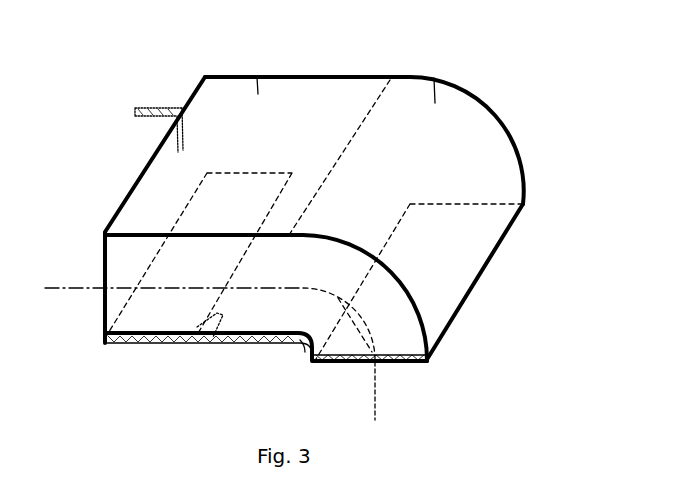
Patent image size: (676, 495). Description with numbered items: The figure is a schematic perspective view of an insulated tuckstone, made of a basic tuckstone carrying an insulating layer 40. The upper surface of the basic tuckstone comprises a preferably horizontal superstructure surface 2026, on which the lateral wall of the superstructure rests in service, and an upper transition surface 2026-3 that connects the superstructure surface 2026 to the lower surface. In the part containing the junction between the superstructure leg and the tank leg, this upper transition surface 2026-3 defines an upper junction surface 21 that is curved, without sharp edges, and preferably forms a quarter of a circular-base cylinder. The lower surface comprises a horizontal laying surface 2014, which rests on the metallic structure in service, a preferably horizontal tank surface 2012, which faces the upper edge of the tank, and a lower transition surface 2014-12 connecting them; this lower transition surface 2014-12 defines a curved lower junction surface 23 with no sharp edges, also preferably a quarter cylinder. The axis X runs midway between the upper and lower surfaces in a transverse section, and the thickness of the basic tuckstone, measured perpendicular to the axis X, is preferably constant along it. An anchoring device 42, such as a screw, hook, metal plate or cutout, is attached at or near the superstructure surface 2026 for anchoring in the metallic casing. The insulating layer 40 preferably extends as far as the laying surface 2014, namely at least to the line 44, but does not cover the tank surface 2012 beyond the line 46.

The superstructure surface 2026 is at (257, 77).
The upper transition surface 2026-3 is at (468, 48).
The upper junction surface 21 is at (467, 128).
The laying surface 2014 is at (108, 312).
The tank surface 2012 is at (393, 362).
The lower transition surface 2014-12 is at (292, 352).
The insulating layer 40 is at (135, 343).
The line 46 is at (348, 362).
The lower junction surface 23 is at (298, 360).
The anchoring device 42 is at (160, 110).
The line 44 is at (217, 315).
The axis X is at (374, 406).